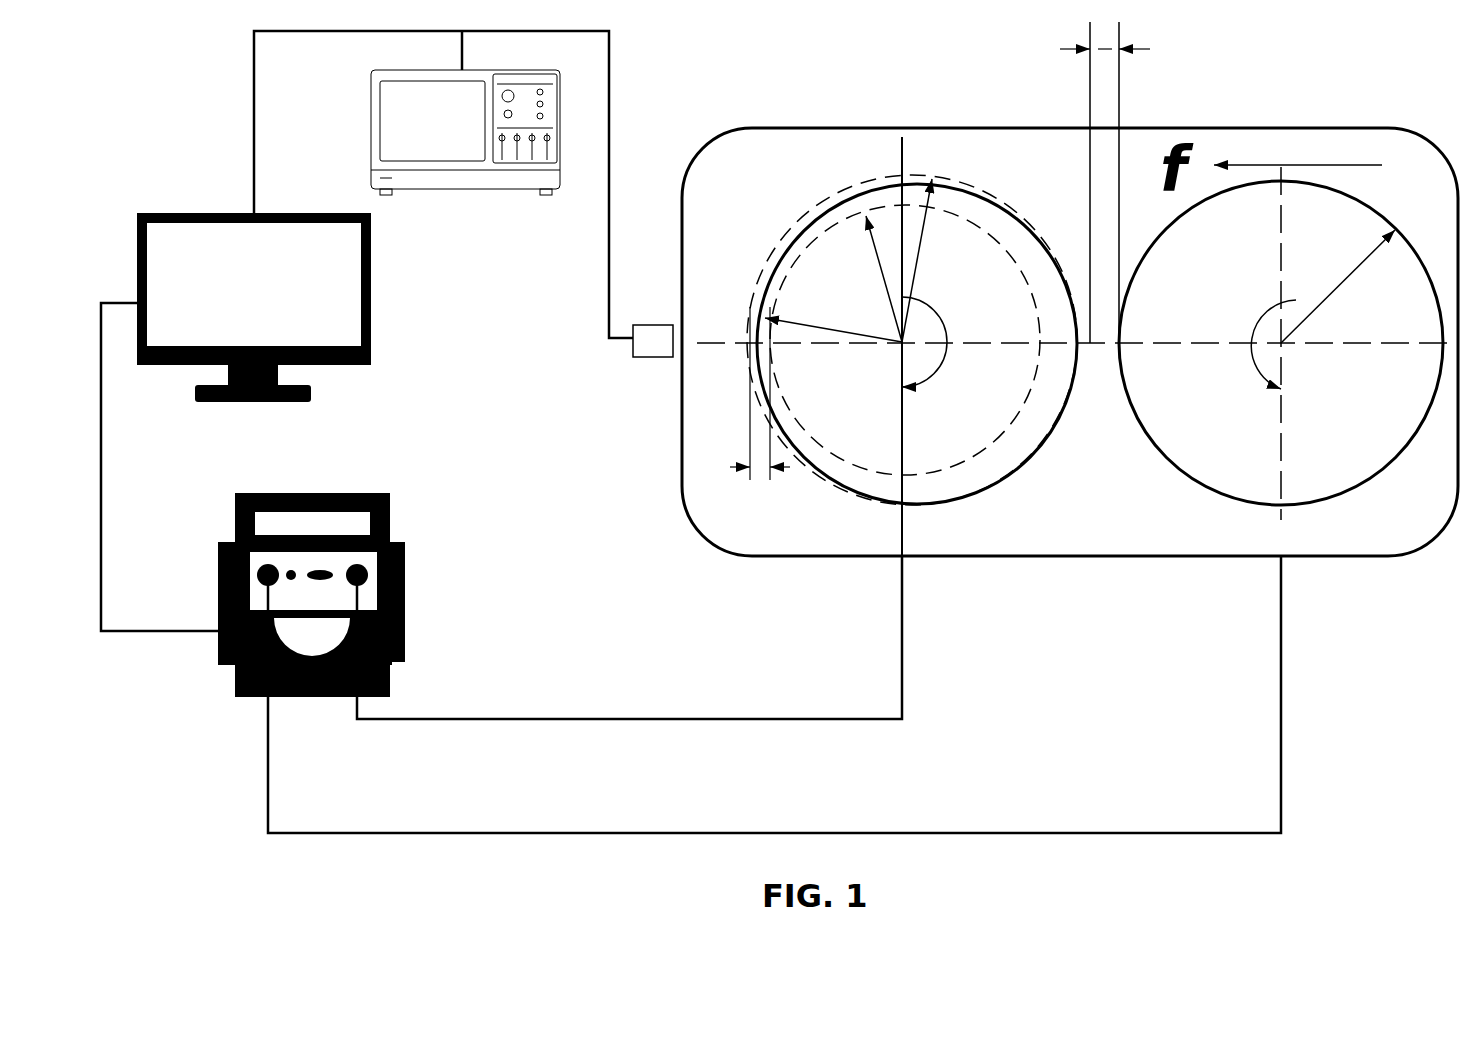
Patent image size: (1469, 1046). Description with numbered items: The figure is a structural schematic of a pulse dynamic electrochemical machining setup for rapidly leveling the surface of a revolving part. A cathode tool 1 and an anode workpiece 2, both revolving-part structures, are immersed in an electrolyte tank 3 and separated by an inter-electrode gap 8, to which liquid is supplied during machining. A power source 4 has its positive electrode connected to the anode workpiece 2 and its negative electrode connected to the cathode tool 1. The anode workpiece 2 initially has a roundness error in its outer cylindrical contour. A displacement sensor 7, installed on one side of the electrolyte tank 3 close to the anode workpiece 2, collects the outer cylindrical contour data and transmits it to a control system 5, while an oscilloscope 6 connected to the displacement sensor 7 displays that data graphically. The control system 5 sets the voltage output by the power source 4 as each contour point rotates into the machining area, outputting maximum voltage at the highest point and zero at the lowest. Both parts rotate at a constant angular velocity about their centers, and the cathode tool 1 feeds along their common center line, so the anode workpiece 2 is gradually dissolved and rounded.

The cathode tool 1 is at (1329, 487).
The anode workpiece 2 is at (1013, 458).
The electrolyte tank 3 is at (712, 470).
The power source 4 is at (257, 668).
The control system 5 is at (187, 222).
The oscilloscope 6 is at (382, 78).
The displacement sensor 7 is at (648, 343).
The inter-electrode gap 8 is at (1117, 53).